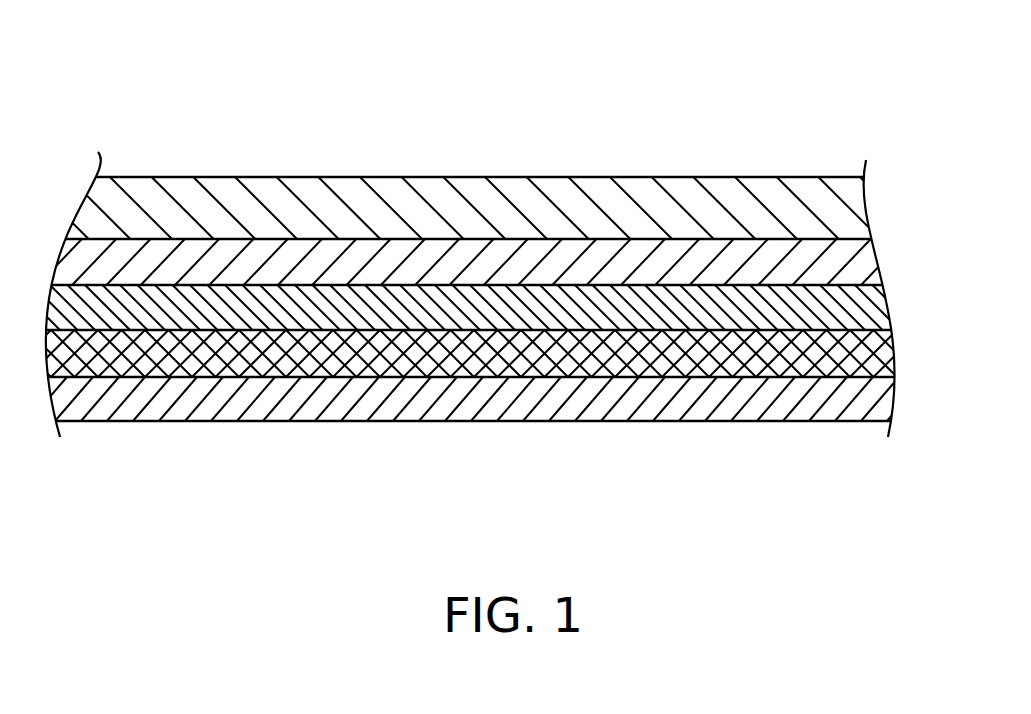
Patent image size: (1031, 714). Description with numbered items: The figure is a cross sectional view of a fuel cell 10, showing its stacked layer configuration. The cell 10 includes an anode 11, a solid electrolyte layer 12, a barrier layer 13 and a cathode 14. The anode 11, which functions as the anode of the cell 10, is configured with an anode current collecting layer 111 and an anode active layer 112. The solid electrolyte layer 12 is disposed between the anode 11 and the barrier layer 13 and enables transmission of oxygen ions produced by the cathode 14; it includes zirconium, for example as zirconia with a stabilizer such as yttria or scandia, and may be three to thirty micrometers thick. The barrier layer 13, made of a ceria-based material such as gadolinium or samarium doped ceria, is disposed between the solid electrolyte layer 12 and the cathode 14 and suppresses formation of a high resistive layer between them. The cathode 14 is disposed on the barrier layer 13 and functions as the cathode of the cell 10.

The fuel cell 10 is at (132, 130).
The anode 11 is at (982, 350).
The anode current collecting layer 111 is at (885, 396).
The anode active layer 112 is at (892, 349).
The solid electrolyte layer 12 is at (856, 312).
The barrier layer 13 is at (857, 243).
The cathode 14 is at (852, 183).